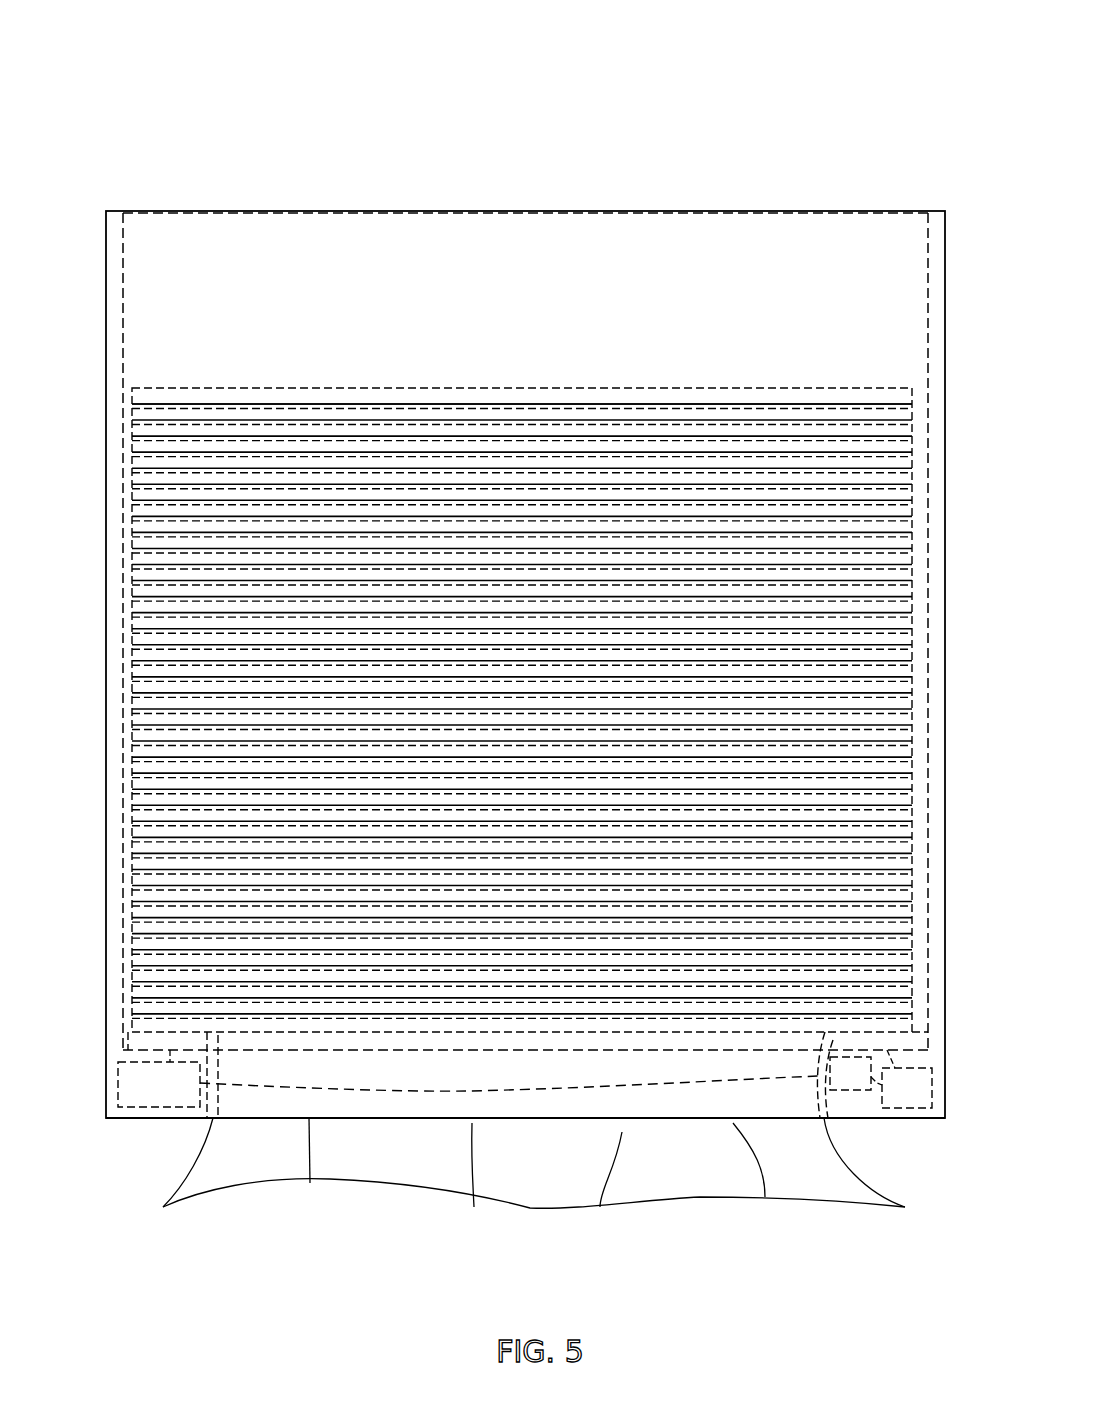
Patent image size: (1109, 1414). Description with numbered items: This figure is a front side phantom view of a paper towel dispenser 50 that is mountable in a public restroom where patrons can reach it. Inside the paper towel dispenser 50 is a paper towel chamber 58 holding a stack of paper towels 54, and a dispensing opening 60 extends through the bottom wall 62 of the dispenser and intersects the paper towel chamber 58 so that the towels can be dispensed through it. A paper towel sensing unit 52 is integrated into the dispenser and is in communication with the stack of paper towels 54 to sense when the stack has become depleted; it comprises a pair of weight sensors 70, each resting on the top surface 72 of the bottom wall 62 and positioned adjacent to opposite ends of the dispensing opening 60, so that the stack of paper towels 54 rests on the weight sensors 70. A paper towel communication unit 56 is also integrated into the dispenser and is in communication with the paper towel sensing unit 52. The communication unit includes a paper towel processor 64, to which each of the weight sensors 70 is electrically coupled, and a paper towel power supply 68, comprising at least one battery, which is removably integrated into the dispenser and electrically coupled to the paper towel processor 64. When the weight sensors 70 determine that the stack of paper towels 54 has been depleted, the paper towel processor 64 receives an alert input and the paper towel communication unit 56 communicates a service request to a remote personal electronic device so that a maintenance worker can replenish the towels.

The paper towel dispenser 50 is at (921, 192).
The paper towel sensing unit 52 is at (862, 1030).
The stack of paper towels 54 is at (376, 388).
The paper towel communication unit 56 is at (106, 1089).
The paper towel chamber 58 is at (655, 253).
The dispensing opening 60 is at (259, 1094).
The bottom wall 62 is at (913, 1118).
The paper towel processor 64 is at (932, 1086).
The paper towel power supply 68 is at (849, 1091).
The weight sensors 70 is at (153, 1040).
The top surface 72 is at (208, 1050).